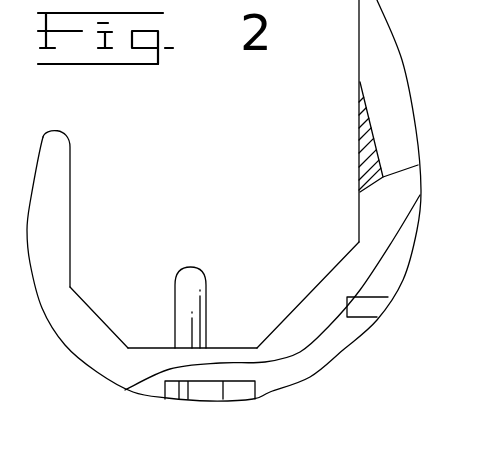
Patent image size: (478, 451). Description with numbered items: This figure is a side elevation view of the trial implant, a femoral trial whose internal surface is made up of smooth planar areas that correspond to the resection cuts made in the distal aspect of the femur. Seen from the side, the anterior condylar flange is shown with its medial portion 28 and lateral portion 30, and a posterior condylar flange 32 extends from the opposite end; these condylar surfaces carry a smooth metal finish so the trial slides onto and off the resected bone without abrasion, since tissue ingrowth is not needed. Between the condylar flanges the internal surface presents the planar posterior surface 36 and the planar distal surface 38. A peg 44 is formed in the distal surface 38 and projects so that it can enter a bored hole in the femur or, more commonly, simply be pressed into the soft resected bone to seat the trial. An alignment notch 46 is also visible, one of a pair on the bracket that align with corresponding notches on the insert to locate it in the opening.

The medial portion of anterior condylar flange 28 is at (377, 52).
The lateral portion of anterior condylar flange 30 is at (359, 152).
The posterior condylar flange 32 is at (55, 172).
The posterior surface 36 is at (97, 308).
The distal surface 38 is at (233, 348).
The peg 44 is at (183, 267).
The alignment notch 46 is at (373, 307).